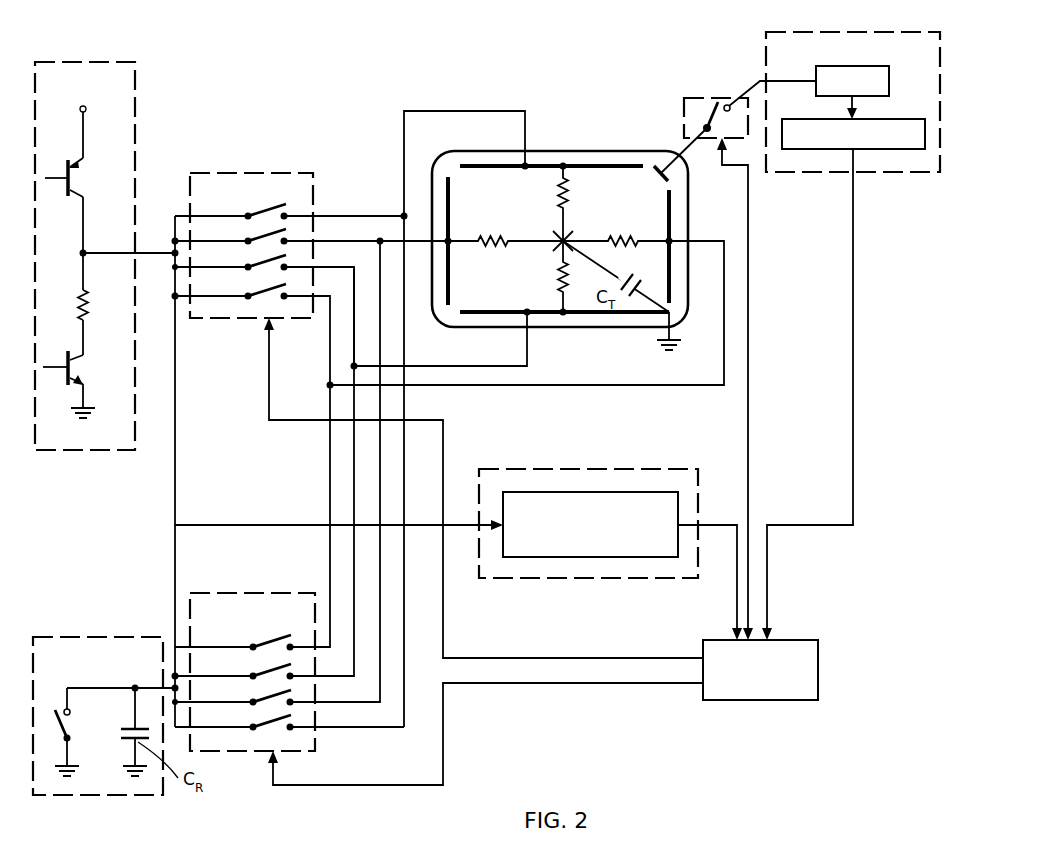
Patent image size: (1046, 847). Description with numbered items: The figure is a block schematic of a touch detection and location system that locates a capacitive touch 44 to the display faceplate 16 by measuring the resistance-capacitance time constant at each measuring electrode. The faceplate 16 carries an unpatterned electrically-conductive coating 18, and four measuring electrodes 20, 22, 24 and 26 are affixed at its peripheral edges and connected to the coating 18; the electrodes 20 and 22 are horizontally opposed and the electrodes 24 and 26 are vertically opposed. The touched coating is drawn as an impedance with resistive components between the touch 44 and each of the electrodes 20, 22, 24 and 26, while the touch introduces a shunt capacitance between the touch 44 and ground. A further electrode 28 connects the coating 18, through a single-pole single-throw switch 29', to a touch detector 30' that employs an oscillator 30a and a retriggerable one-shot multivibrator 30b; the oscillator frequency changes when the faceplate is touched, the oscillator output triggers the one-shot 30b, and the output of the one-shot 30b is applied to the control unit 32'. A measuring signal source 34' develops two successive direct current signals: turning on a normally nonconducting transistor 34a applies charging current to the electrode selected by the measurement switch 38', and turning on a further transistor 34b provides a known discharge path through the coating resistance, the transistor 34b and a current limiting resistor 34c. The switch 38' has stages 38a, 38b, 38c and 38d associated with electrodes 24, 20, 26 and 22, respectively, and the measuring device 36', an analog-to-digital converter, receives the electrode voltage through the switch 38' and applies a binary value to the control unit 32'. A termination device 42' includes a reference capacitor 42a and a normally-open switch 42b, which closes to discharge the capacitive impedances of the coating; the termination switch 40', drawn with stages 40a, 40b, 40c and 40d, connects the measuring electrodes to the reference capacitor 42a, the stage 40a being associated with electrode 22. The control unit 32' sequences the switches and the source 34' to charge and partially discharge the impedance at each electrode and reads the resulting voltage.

The faceplate 16 is at (645, 141).
The electrically-conductive coating 18 is at (542, 236).
The measuring electrode 20 is at (450, 192).
The measuring electrode 22 is at (671, 208).
The measuring electrode 24 is at (608, 165).
The measuring electrode 26 is at (588, 314).
The further electrode 28 is at (653, 172).
The single-pole single-throw switch 29' is at (730, 117).
The touch detector 30' is at (853, 87).
The oscillator 30a is at (866, 66).
The retriggerable one-shot multivibrator 30b is at (853, 124).
The control unit 32' is at (768, 655).
The measuring signal source 34' is at (85, 235).
The transistor 34a is at (79, 177).
The transistor 34b is at (78, 368).
The current limiting resistor 34c is at (101, 305).
The measuring device 36' is at (588, 506).
The measurement switch 38' is at (251, 227).
The switch stage 38a is at (258, 212).
The switch stage 38b is at (258, 238).
The switch stage 38c is at (258, 264).
The switch stage 38d is at (258, 292).
The termination switch 40' is at (252, 656).
The switch stage 40a is at (262, 640).
The switch 40b is at (262, 669).
The switch 40c is at (262, 695).
The switch 40d is at (262, 720).
The termination device 42' is at (104, 697).
The reference capacitor 42a is at (120, 730).
The single-pole single-throw switch 42b is at (72, 724).
The touch 44 is at (560, 244).